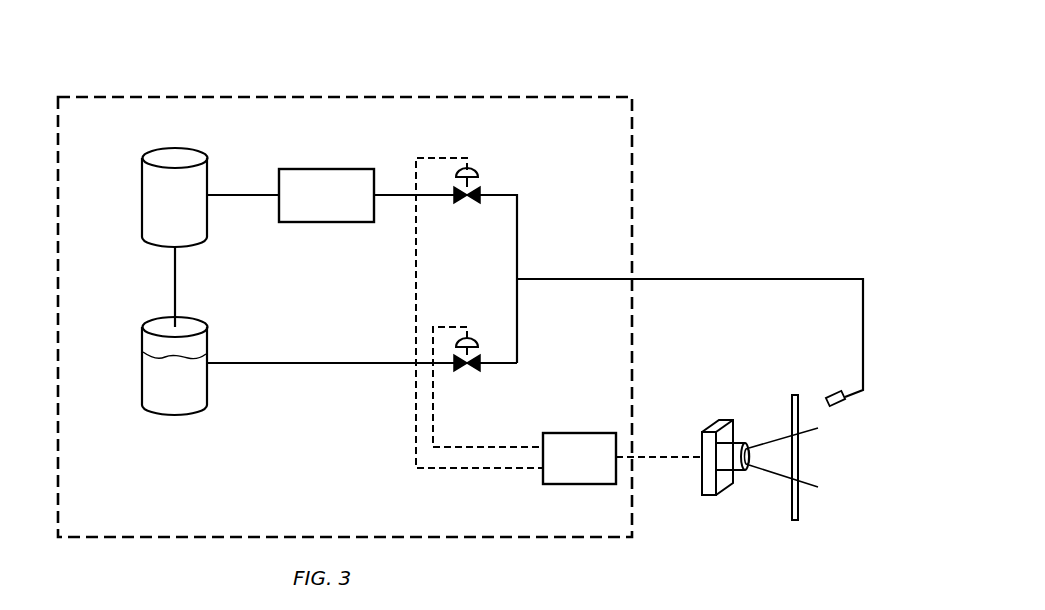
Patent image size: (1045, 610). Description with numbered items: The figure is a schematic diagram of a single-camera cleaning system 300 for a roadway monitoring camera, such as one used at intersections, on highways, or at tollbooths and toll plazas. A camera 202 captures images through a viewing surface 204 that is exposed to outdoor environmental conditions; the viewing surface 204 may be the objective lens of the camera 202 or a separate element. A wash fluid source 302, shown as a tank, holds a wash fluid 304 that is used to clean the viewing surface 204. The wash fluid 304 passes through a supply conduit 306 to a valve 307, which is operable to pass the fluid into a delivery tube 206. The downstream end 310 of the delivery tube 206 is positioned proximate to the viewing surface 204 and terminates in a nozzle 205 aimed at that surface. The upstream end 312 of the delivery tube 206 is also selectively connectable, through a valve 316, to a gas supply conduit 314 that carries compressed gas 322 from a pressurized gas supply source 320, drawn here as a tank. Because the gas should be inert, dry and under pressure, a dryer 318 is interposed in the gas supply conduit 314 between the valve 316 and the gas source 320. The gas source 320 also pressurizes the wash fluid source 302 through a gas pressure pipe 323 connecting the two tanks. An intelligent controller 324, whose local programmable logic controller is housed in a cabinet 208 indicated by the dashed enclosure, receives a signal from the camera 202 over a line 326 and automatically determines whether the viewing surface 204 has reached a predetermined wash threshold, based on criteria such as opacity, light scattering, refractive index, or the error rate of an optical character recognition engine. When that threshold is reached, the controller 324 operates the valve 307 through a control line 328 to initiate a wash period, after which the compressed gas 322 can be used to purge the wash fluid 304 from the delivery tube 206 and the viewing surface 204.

The single-camera cleaning system 300 is at (686, 68).
The cabinet 208 is at (236, 95).
The pressurized gas supply source 320 is at (142, 191).
The compressed gas 322 is at (175, 200).
The gas pressure pipe 323 is at (175, 275).
The wash fluid source 302 is at (142, 378).
The wash fluid 304 is at (175, 386).
The gas supply conduit 314 is at (236, 195).
The dryer 318 is at (366, 195).
The valve 316 is at (476, 174).
The upstream end 312 is at (518, 279).
The supply conduit 306 is at (256, 363).
The valve 307 is at (476, 339).
The control line 328 is at (433, 397).
The intelligent controller 324 is at (579, 458).
The line 326 is at (659, 456).
The delivery tube 206 is at (668, 279).
The nozzle 205 is at (831, 394).
The downstream end 310 is at (846, 399).
The camera 202 is at (727, 484).
The viewing surface 204 is at (798, 500).